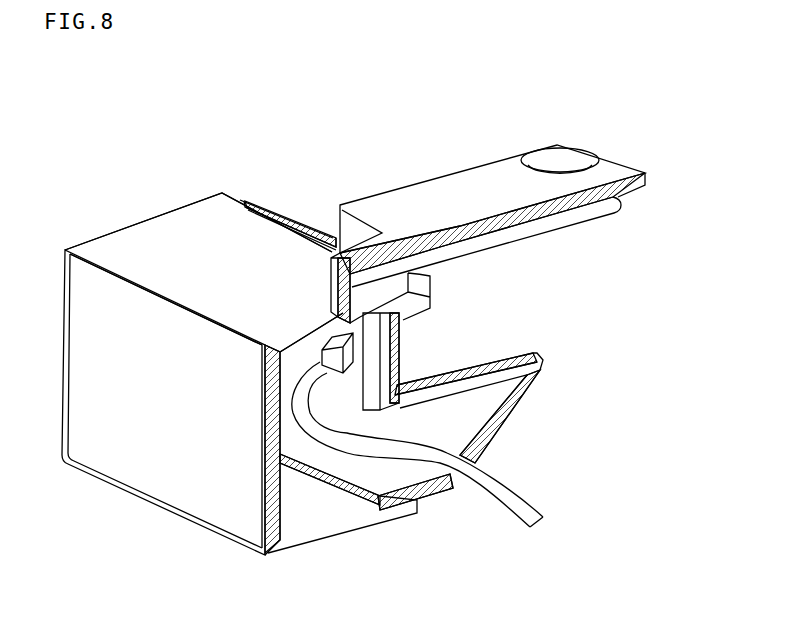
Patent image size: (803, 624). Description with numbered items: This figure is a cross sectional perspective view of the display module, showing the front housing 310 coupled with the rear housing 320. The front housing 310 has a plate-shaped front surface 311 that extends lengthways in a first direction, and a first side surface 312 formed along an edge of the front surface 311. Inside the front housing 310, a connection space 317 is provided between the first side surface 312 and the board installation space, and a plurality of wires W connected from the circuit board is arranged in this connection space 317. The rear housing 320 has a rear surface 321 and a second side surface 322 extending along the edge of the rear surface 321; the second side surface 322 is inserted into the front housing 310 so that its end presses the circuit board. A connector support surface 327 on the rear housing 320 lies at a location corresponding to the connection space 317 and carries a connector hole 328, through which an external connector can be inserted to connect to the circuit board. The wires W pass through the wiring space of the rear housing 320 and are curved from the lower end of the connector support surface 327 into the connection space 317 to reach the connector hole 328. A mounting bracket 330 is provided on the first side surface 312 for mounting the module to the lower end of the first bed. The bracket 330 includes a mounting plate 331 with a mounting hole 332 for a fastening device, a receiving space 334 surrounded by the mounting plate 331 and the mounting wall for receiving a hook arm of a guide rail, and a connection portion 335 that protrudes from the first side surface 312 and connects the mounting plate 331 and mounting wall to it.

The front housing 310 is at (137, 505).
The front surface 311 is at (203, 493).
The first side surface 312 is at (165, 228).
The connection space 317 is at (302, 497).
The rear housing 320 is at (514, 449).
The rear surface 321 is at (524, 414).
The second side surface 322 is at (436, 498).
The connector support surface 327 is at (478, 356).
The connector hole 328 is at (390, 345).
The mounting bracket 330 is at (496, 204).
The mounting plate 331 is at (460, 180).
The mounting hole 332 is at (553, 158).
The receiving space 334 is at (527, 230).
The connection portion 335 is at (340, 230).
The wires W is at (520, 492).